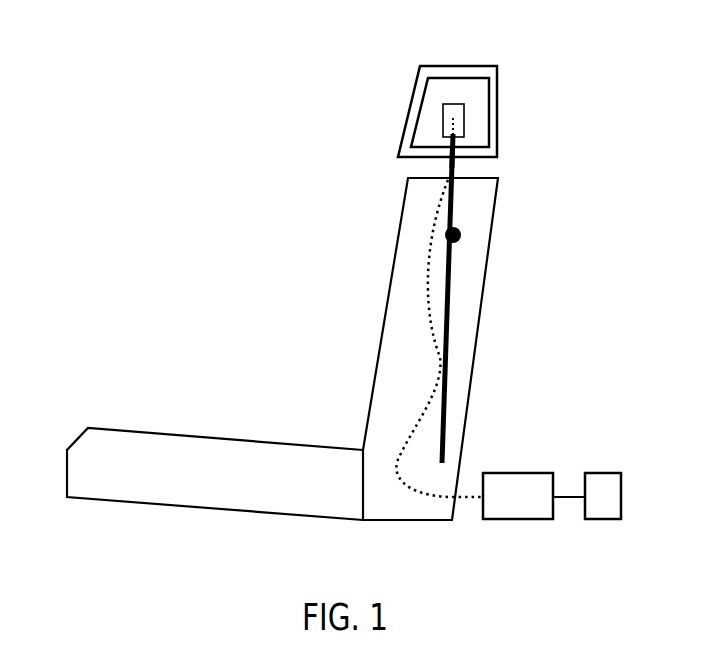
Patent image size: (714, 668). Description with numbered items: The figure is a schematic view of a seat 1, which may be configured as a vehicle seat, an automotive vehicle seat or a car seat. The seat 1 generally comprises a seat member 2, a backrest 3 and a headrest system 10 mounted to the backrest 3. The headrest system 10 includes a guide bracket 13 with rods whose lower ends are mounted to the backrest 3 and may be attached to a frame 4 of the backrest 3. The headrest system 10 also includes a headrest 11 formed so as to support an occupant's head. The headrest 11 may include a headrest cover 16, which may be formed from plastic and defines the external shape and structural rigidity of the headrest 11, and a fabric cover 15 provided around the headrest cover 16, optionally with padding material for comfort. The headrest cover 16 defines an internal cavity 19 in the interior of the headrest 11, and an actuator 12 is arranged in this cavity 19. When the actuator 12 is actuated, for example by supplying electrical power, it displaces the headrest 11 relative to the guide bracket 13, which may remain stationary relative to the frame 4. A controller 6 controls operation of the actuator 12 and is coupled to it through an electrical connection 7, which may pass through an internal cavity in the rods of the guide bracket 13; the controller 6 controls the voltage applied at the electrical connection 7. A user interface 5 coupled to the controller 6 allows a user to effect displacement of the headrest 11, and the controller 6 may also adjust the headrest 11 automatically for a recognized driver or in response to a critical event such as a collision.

The seat 1 is at (98, 193).
The seat member 2 is at (67, 467).
The backrest 3 is at (383, 318).
The frame 4 is at (452, 307).
The user interface 5 is at (618, 475).
The controller 6 is at (526, 473).
The electrical connection 7 is at (472, 498).
The headrest system 10 is at (325, 80).
The headrest 11 is at (415, 75).
The actuator 12 is at (464, 123).
The guide bracket 13 is at (457, 167).
The fabric cover 15 is at (496, 68).
The headrest cover 16 is at (417, 122).
The internal cavity 19 is at (475, 93).